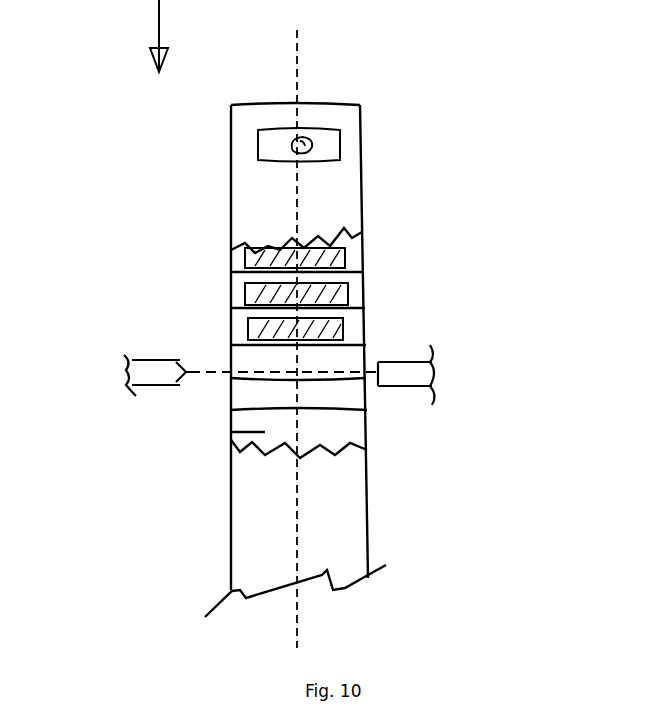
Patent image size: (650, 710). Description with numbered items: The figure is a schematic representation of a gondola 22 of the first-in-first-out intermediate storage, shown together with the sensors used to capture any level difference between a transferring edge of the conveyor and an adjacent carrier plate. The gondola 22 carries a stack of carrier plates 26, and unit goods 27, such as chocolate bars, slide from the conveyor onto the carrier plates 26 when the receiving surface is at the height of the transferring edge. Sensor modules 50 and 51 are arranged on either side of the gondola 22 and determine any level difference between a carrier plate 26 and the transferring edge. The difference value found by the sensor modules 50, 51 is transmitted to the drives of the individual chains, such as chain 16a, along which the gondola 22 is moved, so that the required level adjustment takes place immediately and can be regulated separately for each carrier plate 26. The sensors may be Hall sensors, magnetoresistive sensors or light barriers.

The chain 16a is at (303, 52).
The gondola 22 is at (335, 516).
The carrier plate 26 is at (265, 432).
The unit goods 27 is at (340, 270).
The sensor module 50 is at (148, 370).
The sensor module 51 is at (405, 360).